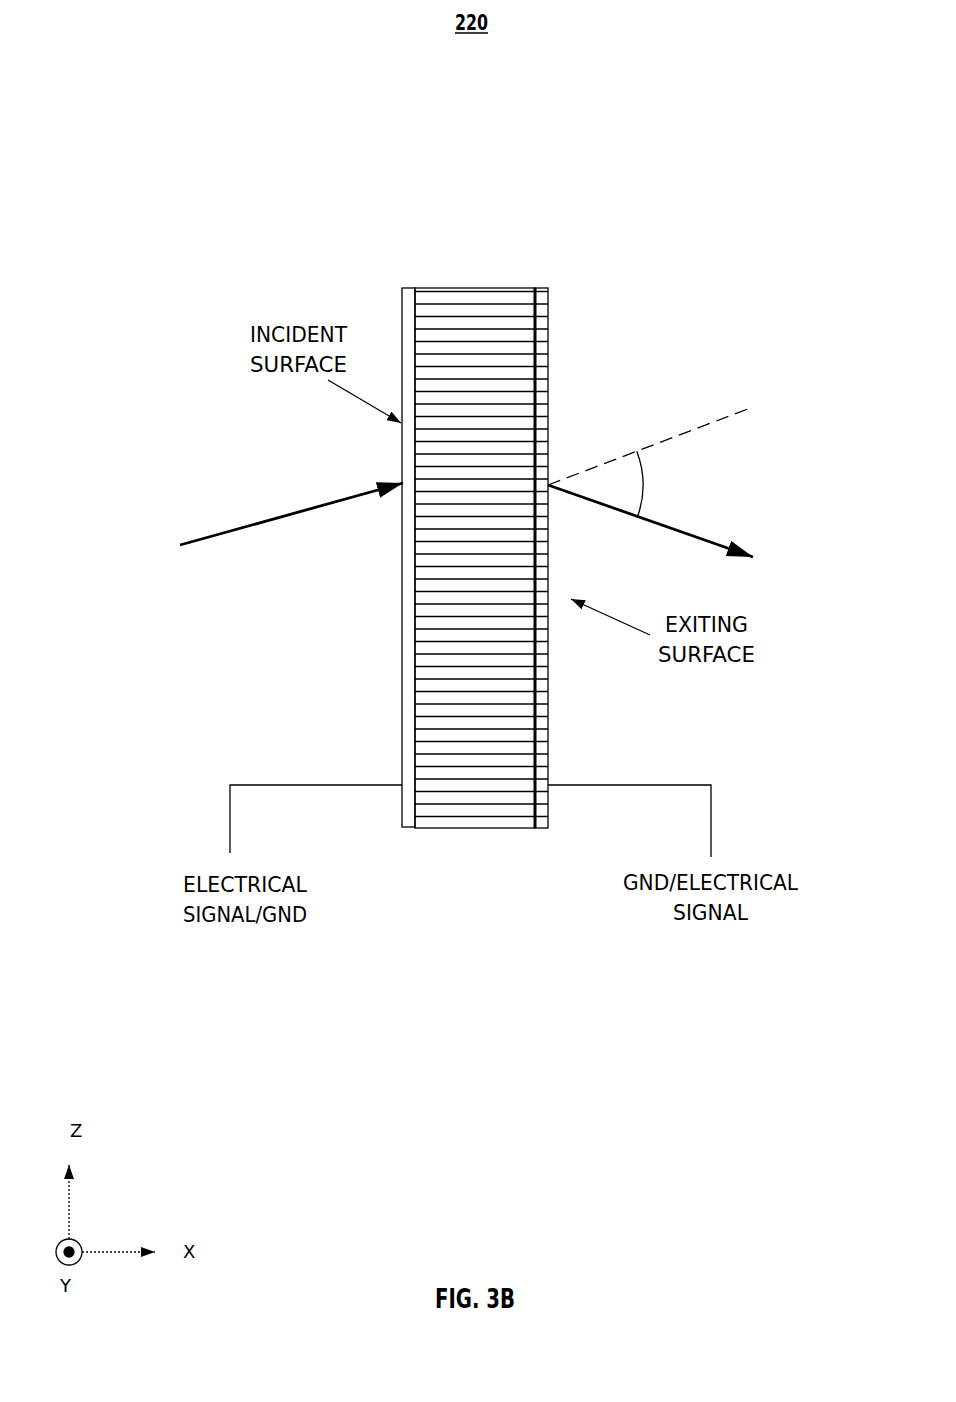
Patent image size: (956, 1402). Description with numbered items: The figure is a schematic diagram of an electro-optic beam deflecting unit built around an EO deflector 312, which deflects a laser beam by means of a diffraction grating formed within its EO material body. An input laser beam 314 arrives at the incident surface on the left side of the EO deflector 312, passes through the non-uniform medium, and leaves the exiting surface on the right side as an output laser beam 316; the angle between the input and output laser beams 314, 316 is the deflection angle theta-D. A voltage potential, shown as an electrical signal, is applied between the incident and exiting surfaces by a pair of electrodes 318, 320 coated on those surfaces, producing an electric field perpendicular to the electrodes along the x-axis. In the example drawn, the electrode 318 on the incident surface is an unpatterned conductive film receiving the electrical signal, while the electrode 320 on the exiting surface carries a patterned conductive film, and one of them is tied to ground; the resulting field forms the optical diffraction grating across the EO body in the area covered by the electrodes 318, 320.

The EO deflector 312 is at (516, 539).
The input laser beam 314 is at (254, 514).
The output laser beam 316 is at (680, 482).
The electrode 318 is at (375, 557).
The electrode 320 is at (585, 558).